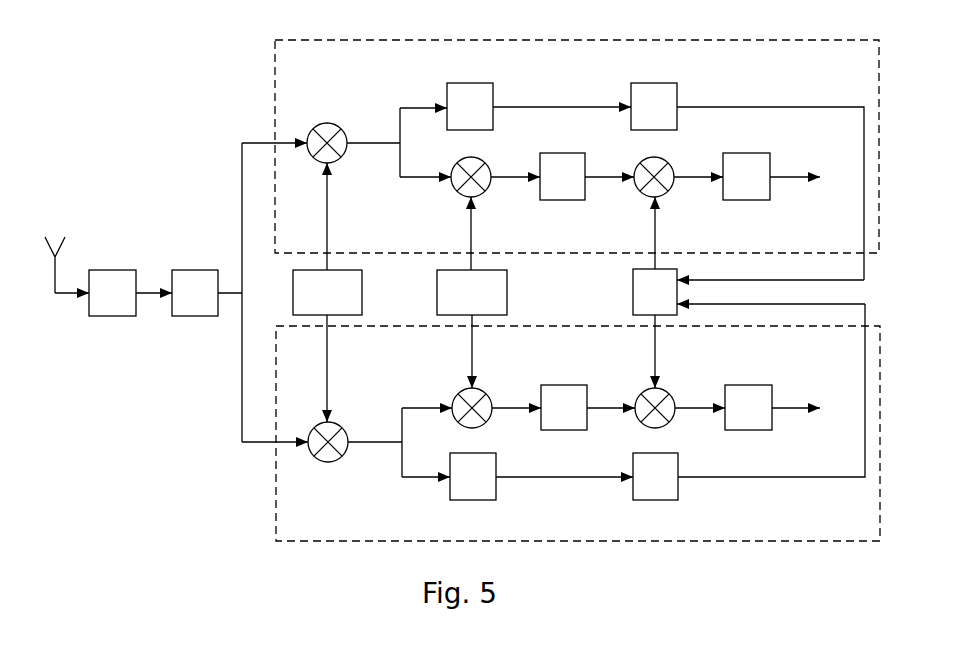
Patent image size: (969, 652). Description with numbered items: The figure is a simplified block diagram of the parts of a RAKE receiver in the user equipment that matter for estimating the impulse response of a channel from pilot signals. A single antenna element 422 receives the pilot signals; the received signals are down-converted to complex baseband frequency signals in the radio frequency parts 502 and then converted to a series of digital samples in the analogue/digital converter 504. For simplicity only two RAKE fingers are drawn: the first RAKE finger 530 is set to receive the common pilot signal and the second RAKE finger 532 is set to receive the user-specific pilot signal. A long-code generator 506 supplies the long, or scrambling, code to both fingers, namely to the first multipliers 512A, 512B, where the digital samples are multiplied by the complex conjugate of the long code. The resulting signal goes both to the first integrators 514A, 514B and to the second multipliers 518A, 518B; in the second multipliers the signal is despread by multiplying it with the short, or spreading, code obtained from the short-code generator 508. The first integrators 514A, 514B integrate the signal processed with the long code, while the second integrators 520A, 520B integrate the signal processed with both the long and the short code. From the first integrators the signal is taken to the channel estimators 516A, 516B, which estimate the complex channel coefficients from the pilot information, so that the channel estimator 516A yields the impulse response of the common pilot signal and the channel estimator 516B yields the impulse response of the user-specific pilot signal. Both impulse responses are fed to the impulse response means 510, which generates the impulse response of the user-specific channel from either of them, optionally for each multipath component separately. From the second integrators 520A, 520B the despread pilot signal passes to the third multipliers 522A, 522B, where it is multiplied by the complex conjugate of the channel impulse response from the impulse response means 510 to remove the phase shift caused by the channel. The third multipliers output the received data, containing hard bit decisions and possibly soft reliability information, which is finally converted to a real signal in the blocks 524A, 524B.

The antenna element 422 is at (55, 253).
The radio frequency parts 502 is at (113, 270).
The analogue/digital converter 504 is at (195, 270).
The long-code generator 506 is at (363, 293).
The short-code generator 508 is at (508, 307).
The impulse response means 510 is at (632, 277).
The first RAKE finger 530 is at (275, 80).
The second RAKE finger 532 is at (277, 478).
The first multiplier 512A is at (328, 122).
The first multiplier 512B is at (328, 463).
The first integrator 514A is at (473, 83).
The first integrator 514B is at (473, 500).
The channel estimator 516A is at (653, 83).
The channel estimator 516B is at (656, 500).
The second multiplier 518A is at (483, 161).
The second multiplier 518B is at (484, 425).
The second integrator 520A is at (562, 200).
The second integrator 520B is at (562, 385).
The third multiplier 522A is at (666, 161).
The third multiplier 522B is at (667, 425).
The block 524A is at (760, 153).
The block 524B is at (762, 430).